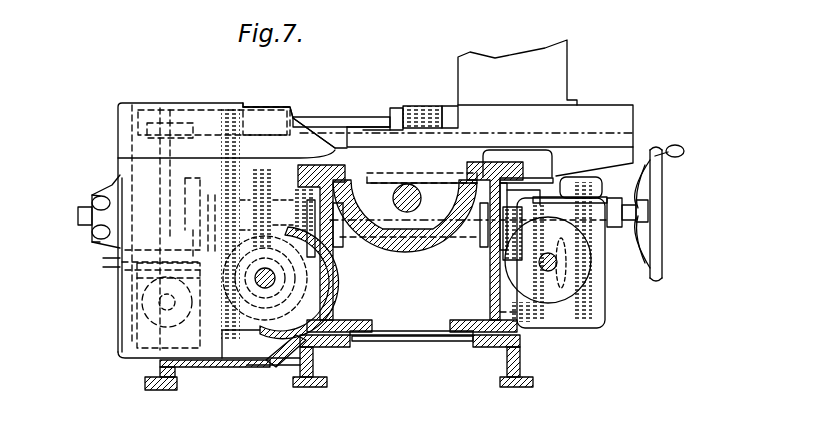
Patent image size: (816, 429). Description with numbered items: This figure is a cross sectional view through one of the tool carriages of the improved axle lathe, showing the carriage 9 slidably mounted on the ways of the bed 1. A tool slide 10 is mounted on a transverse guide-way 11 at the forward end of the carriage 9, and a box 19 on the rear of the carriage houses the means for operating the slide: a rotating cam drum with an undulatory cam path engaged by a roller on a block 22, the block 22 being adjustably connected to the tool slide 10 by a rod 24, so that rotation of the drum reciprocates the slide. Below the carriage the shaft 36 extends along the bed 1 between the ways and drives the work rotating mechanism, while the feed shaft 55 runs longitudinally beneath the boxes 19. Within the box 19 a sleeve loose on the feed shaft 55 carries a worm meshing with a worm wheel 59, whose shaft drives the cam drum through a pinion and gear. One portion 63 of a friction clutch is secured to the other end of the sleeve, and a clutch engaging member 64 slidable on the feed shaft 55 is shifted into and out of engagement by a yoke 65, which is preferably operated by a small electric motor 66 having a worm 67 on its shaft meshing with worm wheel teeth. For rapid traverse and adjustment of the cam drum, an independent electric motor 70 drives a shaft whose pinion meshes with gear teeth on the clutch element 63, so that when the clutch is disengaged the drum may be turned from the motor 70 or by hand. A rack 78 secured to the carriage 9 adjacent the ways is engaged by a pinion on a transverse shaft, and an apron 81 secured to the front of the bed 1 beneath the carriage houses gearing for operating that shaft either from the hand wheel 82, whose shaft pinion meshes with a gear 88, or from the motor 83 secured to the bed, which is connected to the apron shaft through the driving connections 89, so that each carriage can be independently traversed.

The bed 1 is at (402, 256).
The tool carriage 9 is at (628, 152).
The tool slide 10 is at (555, 63).
The transverse guide-way 11 is at (366, 130).
The box 19 is at (118, 155).
The block 22 is at (291, 104).
The rod 24 is at (330, 117).
The shaft 36 is at (392, 196).
The feed shaft 55 is at (275, 279).
The worm wheel 59 is at (270, 188).
The friction clutch portion 63 is at (331, 310).
The clutch engaging member 64 is at (322, 290).
The yoke 65 is at (280, 292).
The electric motor 66 is at (140, 338).
The worm 67 is at (150, 304).
The electric motor 70 is at (117, 184).
The rack 78 is at (508, 204).
The apron 81 is at (598, 300).
The hand wheel 82 is at (664, 196).
The motor 83 is at (550, 305).
The gear 88 is at (598, 326).
The driving connections 89 is at (543, 325).